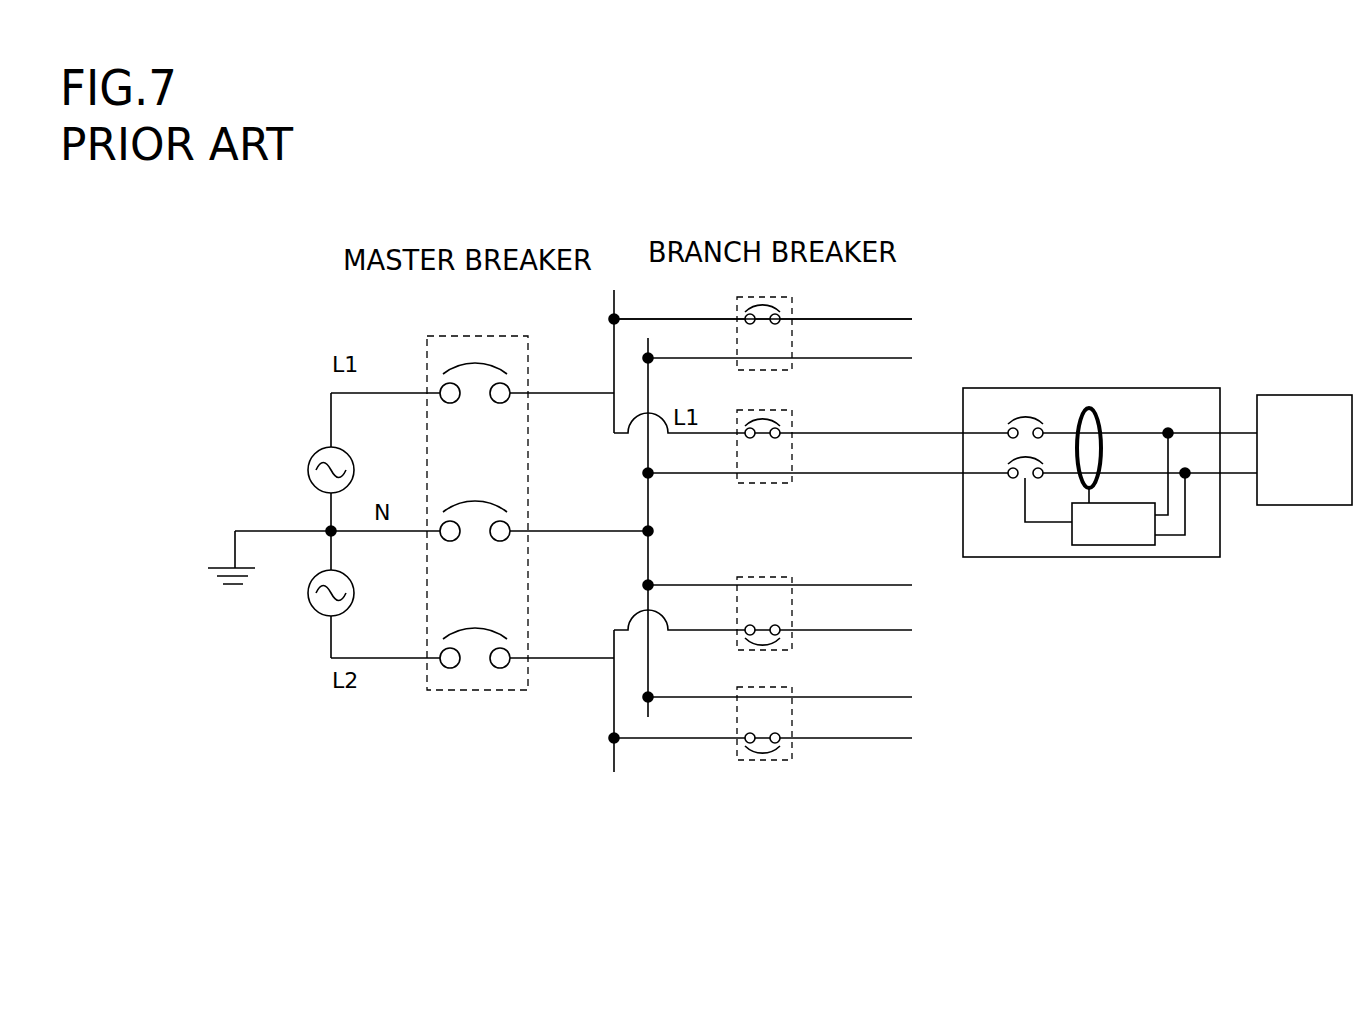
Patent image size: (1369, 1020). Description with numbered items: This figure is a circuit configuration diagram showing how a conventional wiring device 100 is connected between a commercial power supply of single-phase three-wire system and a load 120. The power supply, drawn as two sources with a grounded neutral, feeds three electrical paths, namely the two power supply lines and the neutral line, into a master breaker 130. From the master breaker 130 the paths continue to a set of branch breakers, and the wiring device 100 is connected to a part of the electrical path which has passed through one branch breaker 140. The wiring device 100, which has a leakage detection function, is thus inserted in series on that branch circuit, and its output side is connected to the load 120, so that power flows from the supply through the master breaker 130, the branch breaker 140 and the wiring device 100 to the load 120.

The master breaker 130 is at (470, 336).
The branch breaker 140 is at (790, 427).
The wiring device 100 is at (1088, 388).
The load 120 is at (1292, 395).